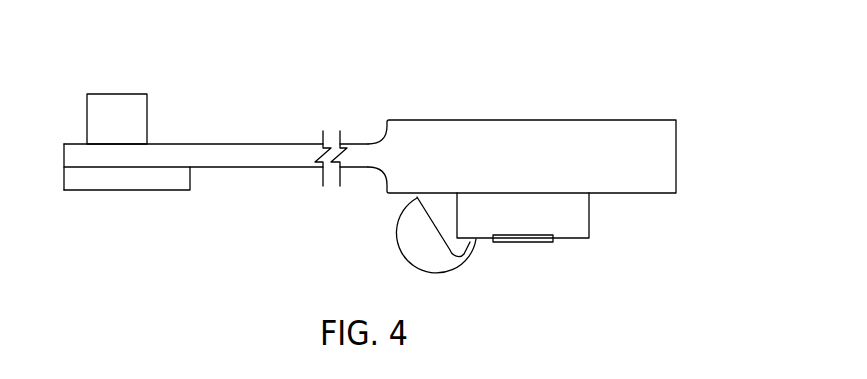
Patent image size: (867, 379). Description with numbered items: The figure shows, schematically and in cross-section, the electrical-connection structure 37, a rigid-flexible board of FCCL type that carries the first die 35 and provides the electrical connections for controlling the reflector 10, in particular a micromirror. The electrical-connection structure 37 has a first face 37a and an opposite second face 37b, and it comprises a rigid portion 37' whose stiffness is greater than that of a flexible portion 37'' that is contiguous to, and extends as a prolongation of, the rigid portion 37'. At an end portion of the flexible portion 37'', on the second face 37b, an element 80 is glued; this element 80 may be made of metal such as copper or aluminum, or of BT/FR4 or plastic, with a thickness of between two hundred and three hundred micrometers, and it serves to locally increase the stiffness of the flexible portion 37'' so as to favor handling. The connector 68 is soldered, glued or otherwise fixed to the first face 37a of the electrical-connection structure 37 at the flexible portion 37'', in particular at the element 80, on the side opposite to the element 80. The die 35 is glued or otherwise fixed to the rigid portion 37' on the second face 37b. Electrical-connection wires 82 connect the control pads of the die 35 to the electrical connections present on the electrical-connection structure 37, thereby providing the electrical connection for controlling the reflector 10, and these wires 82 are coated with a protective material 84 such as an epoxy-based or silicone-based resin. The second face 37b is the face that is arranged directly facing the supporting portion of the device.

The electrical-connection structure 37 is at (393, 130).
The rigid portion 37' is at (545, 131).
The flexible portion 37'' is at (216, 160).
The first face 37a is at (300, 144).
The second face 37b is at (300, 168).
The connector 68 is at (118, 118).
The element 80 is at (126, 181).
The first die 35 is at (580, 206).
The reflector 10 is at (537, 242).
The protective material 84 is at (412, 227).
The electrical-connection wires 82 is at (447, 250).